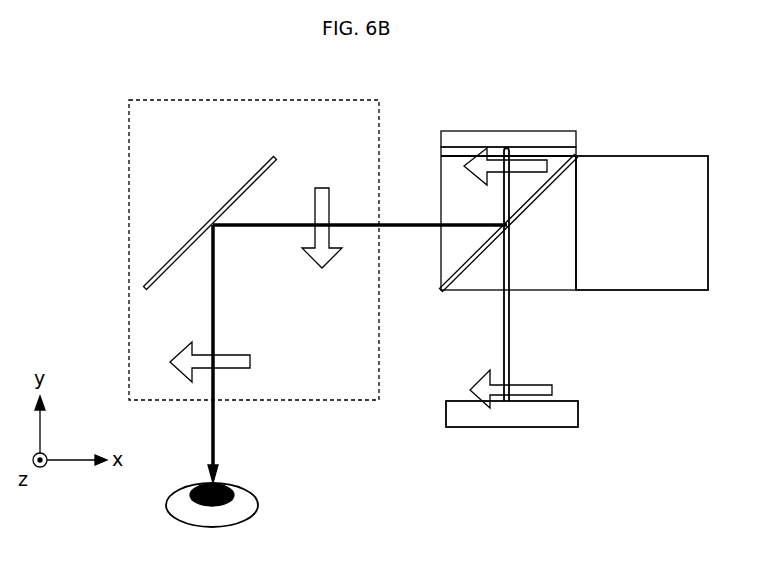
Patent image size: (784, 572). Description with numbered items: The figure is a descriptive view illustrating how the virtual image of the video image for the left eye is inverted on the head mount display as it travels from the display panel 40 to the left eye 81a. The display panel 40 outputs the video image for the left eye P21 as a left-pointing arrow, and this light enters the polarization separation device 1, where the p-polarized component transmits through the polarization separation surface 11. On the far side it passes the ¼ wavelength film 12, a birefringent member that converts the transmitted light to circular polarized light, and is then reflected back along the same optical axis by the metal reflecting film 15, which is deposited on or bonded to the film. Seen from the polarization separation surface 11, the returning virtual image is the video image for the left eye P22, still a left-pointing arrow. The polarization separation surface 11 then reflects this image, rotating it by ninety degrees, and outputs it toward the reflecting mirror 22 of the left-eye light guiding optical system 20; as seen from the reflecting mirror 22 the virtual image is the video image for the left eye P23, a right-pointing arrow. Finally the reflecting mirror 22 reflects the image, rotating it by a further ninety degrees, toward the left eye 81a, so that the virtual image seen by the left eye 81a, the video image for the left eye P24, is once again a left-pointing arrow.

The polarization separation device 1 is at (662, 142).
The polarization separation surface 11 is at (538, 195).
The ¼ wavelength film 12 is at (563, 150).
The metal reflecting film 15 is at (543, 131).
The left-eye light guiding optical system 20 is at (232, 100).
The reflecting mirror 22 is at (254, 177).
The display panel 40 is at (573, 413).
The left eye 81a is at (258, 503).
The video image for the left eye P21 is at (468, 373).
The video image for the left eye P22 is at (486, 184).
The video image for the left eye P23 is at (320, 186).
The video image for the left eye P24 is at (240, 354).